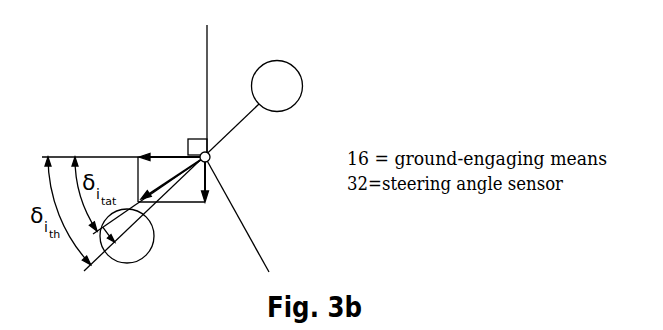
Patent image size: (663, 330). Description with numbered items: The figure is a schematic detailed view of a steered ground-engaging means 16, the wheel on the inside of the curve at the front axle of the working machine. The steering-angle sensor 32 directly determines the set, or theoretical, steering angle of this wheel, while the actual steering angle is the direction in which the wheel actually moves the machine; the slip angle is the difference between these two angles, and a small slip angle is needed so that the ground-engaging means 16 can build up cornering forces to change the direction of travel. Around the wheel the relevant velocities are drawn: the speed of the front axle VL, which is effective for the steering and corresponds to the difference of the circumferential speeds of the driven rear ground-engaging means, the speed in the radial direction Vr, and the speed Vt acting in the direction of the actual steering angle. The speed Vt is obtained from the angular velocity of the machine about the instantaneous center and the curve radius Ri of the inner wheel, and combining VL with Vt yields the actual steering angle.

The ground-engaging means 16 is at (101, 85).
The steering-angle sensor 32 is at (188, 138).
The curve radius of the inner wheel Ri is at (237, 214).
The speed of the front axle VL is at (172, 142).
The speed in the radial direction Vr is at (212, 196).
The speed in the direction of the actual steering angle Vt is at (150, 196).